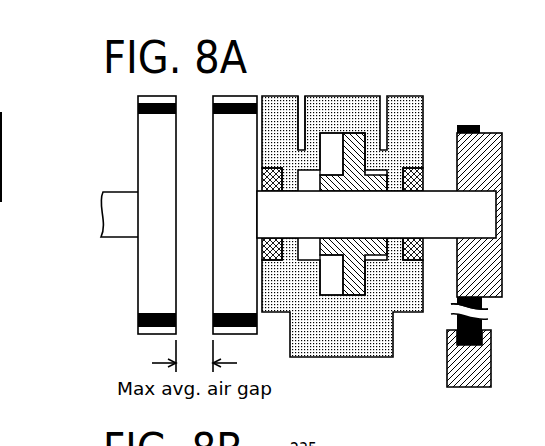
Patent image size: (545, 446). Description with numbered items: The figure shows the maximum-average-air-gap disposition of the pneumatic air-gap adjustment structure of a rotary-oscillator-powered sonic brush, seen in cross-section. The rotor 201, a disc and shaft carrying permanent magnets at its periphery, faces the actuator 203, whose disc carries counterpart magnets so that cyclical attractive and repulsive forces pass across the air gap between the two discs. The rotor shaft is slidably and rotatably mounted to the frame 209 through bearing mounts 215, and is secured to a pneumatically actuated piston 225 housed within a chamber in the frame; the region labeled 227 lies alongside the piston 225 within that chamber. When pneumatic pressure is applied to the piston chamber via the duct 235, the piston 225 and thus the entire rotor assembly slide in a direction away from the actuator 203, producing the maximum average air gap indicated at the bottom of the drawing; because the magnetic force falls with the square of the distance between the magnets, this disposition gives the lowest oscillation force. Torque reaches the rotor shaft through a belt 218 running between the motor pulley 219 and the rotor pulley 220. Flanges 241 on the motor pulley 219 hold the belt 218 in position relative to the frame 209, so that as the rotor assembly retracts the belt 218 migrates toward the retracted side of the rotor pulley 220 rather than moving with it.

The rotor 201 is at (267, 200).
The actuator 203 is at (172, 222).
The frame 209 is at (357, 348).
The bearing mounts 215 is at (274, 261).
The belt 218 is at (453, 315).
The motor pulley 219 is at (447, 362).
The rotor pulley 220 is at (455, 134).
The piston 225 is at (363, 130).
The cavity / recess 227 is at (332, 140).
The duct 235 is at (300, 90).
The flanges 241 is at (484, 311).